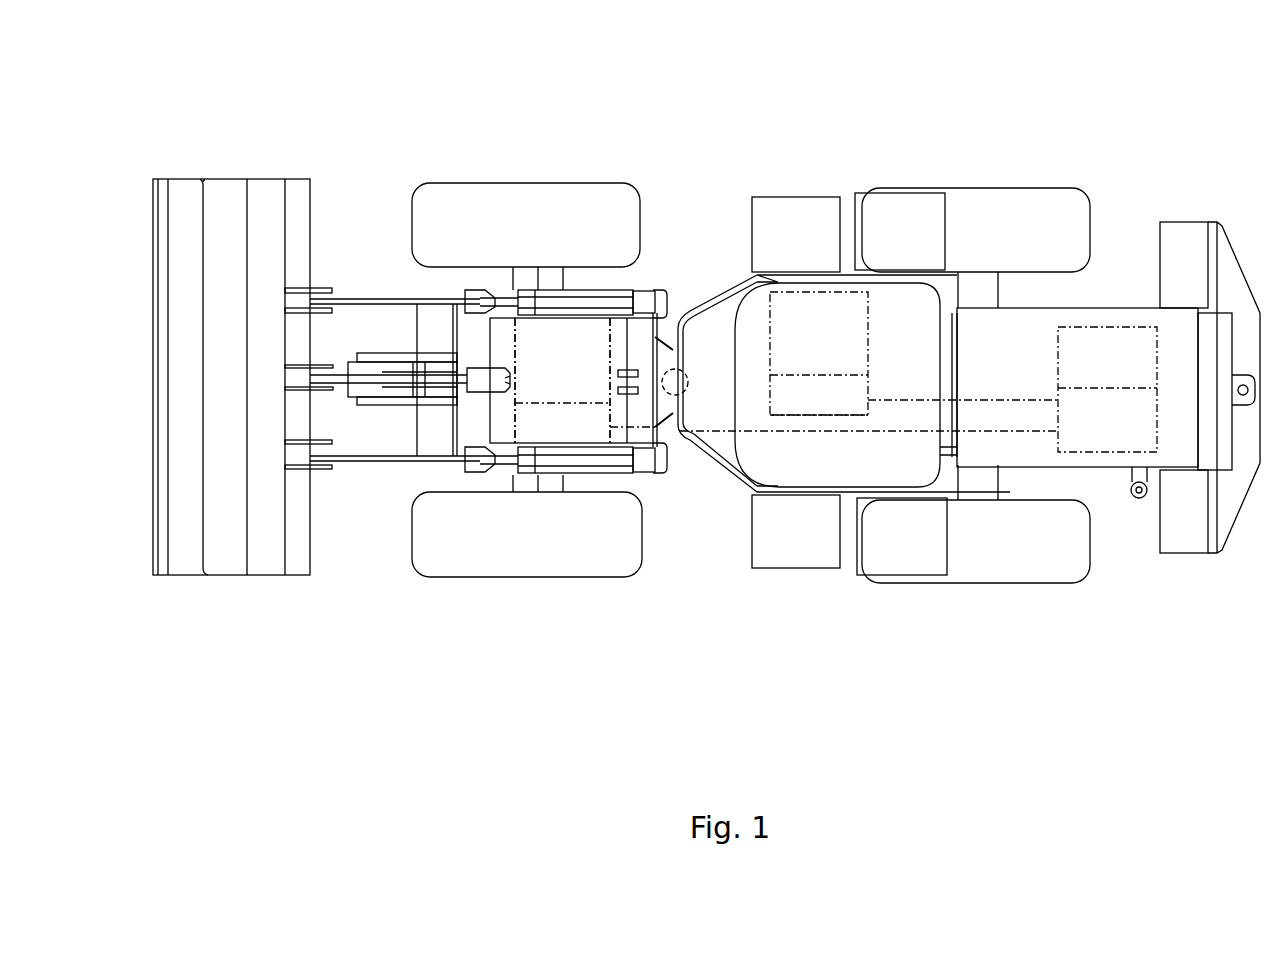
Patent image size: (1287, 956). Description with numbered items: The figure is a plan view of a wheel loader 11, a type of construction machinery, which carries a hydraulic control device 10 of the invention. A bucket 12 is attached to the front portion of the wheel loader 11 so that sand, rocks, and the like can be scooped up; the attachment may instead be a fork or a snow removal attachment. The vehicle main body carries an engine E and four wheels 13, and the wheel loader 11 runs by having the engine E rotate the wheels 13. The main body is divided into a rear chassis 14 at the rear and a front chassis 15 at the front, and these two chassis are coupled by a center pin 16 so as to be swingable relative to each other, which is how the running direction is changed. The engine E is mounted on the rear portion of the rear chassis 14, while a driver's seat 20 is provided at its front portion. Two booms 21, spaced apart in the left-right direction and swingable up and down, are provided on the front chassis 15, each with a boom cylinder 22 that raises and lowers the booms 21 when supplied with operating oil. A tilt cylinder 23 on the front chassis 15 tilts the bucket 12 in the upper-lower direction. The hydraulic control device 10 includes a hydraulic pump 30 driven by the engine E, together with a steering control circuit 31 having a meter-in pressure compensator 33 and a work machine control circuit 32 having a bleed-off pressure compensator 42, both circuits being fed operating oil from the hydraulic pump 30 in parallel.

The hydraulic control device 10 is at (920, 308).
The wheel loader 11 is at (1128, 162).
The bucket 12 is at (262, 188).
The wheels 13 is at (573, 190).
The rear chassis 14 is at (1110, 467).
The front chassis 15 is at (462, 430).
The center pin 16 is at (678, 335).
The driver's seat 20 is at (820, 492).
The booms 21 is at (369, 300).
The boom cylinders 22 is at (590, 297).
The tilt cylinder 23 is at (478, 368).
The hydraulic pump 30 is at (1082, 443).
The steering control circuit 31 is at (812, 300).
The work machine control circuit 32 is at (527, 290).
The meter-in pressure compensator 33 is at (800, 405).
The bleed-off pressure compensator 42 is at (534, 443).
The engine E is at (1110, 338).